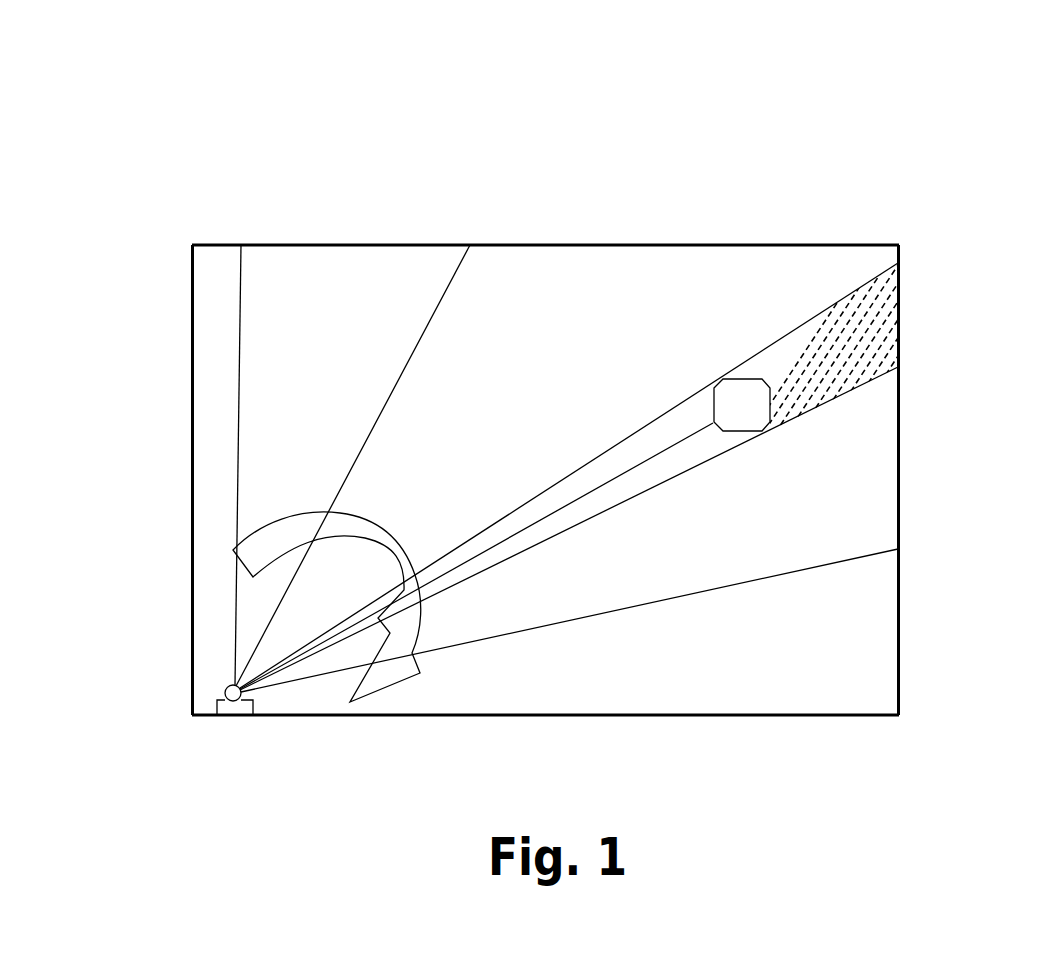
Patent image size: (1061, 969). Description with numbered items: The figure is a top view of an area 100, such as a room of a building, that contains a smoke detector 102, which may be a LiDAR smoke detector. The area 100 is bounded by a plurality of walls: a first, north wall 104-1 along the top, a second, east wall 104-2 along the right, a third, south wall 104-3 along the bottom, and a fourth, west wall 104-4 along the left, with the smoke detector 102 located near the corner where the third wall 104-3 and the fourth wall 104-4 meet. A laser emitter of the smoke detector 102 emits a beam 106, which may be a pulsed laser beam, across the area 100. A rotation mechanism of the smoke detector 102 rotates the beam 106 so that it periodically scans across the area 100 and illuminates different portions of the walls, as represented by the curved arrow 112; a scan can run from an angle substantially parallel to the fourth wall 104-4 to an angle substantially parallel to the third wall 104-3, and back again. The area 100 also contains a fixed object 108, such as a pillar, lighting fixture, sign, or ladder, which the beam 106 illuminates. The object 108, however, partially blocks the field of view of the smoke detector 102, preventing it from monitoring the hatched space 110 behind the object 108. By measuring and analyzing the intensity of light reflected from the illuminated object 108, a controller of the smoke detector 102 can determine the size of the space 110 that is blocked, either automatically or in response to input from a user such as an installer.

The area 100 is at (332, 102).
The smoke detector 102 is at (217, 700).
The first wall 104-1 is at (627, 243).
The second wall 104-2 is at (900, 625).
The third wall 104-3 is at (625, 717).
The fourth wall 104-4 is at (192, 458).
The beam 106 is at (427, 325).
The object 108 is at (753, 424).
The space 110 is at (842, 337).
The arrow 112 is at (385, 518).